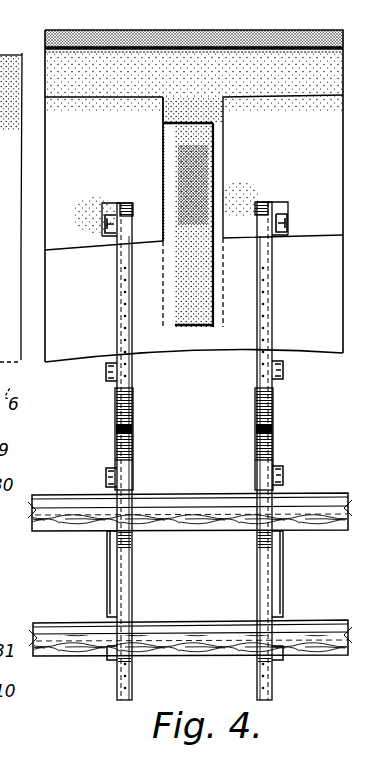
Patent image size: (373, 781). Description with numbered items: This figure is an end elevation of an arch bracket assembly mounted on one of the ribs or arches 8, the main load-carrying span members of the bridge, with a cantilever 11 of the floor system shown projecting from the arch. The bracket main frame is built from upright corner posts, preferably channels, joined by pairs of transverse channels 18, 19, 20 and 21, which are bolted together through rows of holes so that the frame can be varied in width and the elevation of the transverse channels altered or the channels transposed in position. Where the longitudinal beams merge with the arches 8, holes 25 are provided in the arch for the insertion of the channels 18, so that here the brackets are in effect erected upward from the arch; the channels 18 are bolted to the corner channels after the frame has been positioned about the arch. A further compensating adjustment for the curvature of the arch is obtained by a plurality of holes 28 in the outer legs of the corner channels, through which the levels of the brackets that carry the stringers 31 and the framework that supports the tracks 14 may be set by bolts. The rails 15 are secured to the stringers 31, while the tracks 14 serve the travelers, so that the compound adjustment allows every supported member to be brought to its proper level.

The ribs or arches 8 is at (194, 196).
The cantilevers 11 is at (213, 176).
The tracks 14 is at (198, 494).
The rails 15 is at (195, 621).
The transverse channels 18 is at (103, 222).
The transverse channels 19 is at (106, 373).
The transverse channels 20 is at (106, 477).
The transverse channels 21 is at (107, 616).
The holes 25 is at (109, 203).
The holes 28 is at (120, 374).
The stringers 31 is at (283, 657).